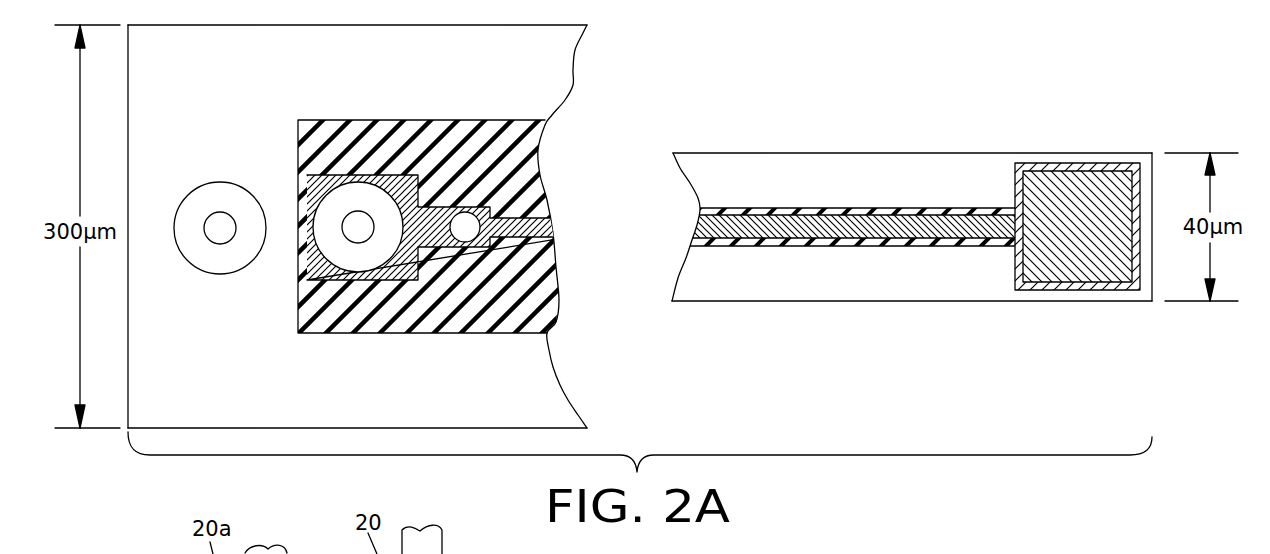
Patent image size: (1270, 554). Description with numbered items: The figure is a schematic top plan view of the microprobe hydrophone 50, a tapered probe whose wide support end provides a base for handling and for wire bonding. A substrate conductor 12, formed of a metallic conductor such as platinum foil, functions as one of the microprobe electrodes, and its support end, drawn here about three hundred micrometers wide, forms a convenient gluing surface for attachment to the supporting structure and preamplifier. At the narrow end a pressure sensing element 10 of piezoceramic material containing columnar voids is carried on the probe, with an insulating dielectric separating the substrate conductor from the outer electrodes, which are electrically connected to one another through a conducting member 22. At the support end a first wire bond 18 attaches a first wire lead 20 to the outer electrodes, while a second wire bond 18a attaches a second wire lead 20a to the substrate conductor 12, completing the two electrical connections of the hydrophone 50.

The pressure sensing element 10 is at (1107, 291).
The substrate conductor 12 is at (486, 410).
The first wire bond 18 is at (382, 250).
The second wire bond 18a is at (180, 252).
The first wire lead 20 is at (352, 240).
The second wire lead 20a is at (226, 243).
The conducting member 22 is at (468, 223).
The microprobe hydrophone 50 is at (712, 128).